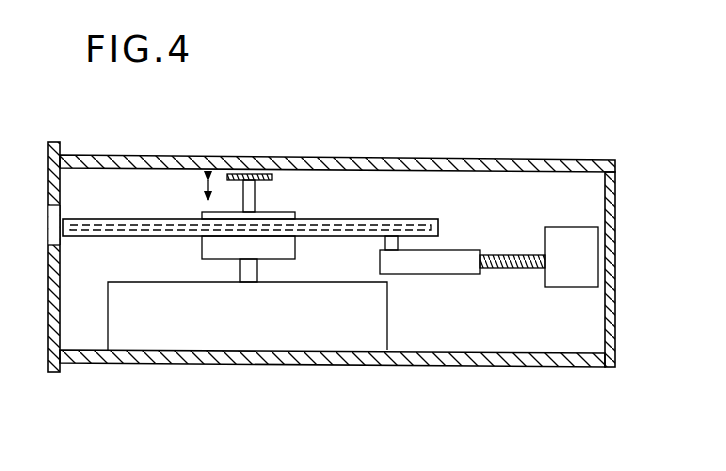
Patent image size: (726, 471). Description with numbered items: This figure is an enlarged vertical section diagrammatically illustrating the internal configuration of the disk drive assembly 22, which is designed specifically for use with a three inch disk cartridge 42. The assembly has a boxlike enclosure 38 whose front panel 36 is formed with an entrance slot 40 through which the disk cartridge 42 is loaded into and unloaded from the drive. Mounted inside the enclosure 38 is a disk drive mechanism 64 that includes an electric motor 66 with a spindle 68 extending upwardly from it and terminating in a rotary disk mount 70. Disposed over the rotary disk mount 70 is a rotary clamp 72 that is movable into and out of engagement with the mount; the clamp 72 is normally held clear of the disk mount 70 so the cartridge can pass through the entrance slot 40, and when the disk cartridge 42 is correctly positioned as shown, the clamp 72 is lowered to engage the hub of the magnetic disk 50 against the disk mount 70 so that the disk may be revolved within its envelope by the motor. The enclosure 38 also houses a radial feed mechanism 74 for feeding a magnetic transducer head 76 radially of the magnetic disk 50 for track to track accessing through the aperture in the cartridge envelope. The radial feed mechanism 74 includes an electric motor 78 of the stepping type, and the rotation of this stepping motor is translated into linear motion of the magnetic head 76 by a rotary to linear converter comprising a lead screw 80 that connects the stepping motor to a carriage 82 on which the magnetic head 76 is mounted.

The disk drive assembly 22 is at (436, 157).
The front panel 36 is at (47, 287).
The boxlike enclosure 38 is at (619, 231).
The entrance slot 40 is at (47, 207).
The disk cartridge 42 is at (250, 225).
The magnetic disk 50 is at (123, 229).
The disk drive mechanism 64 is at (277, 315).
The electric motor 66 is at (388, 318).
The spindle 68 is at (257, 272).
The rotary disk mount 70 is at (202, 252).
The rotary clamp 72 is at (290, 216).
The radial feed mechanism 74 is at (470, 262).
The magnetic transducer head 76 is at (382, 243).
The electric motor 78 is at (568, 227).
The lead screw 80 is at (506, 255).
The carriage 82 is at (451, 266).